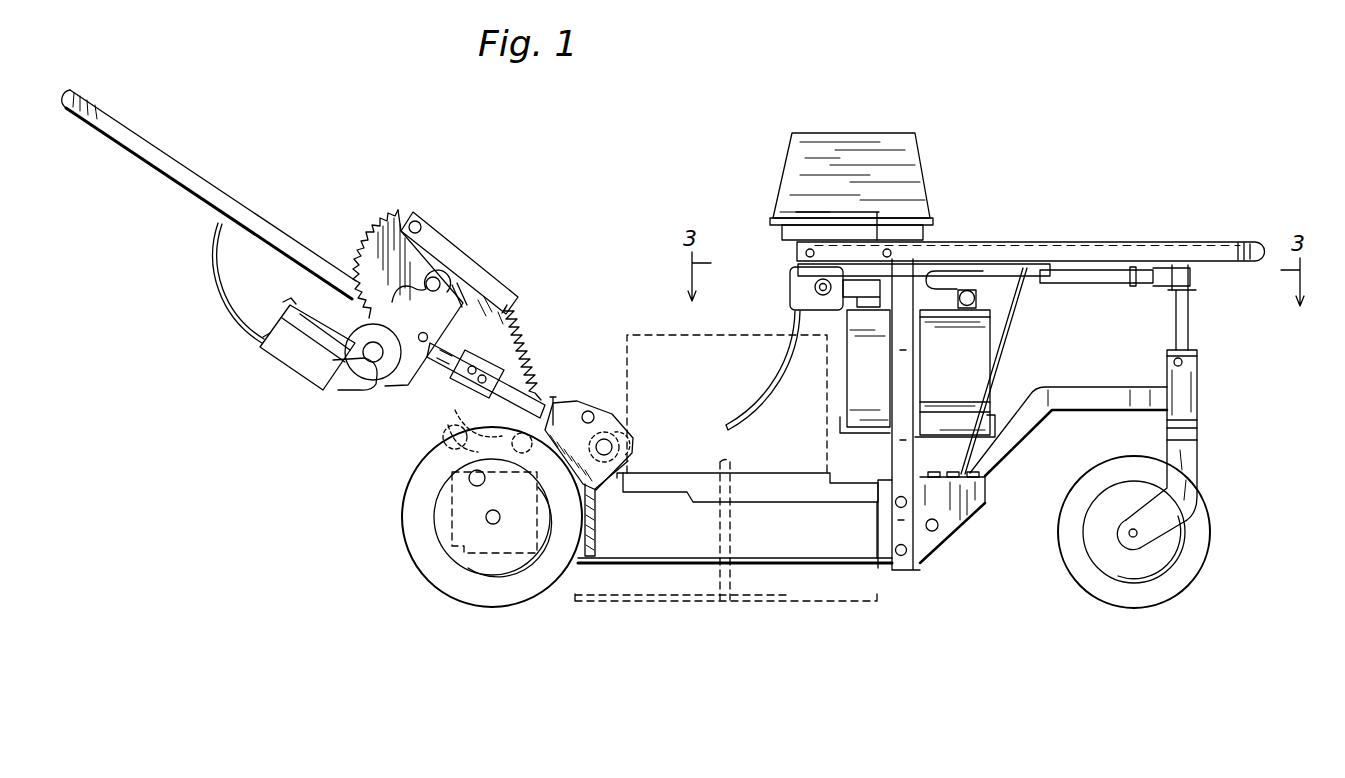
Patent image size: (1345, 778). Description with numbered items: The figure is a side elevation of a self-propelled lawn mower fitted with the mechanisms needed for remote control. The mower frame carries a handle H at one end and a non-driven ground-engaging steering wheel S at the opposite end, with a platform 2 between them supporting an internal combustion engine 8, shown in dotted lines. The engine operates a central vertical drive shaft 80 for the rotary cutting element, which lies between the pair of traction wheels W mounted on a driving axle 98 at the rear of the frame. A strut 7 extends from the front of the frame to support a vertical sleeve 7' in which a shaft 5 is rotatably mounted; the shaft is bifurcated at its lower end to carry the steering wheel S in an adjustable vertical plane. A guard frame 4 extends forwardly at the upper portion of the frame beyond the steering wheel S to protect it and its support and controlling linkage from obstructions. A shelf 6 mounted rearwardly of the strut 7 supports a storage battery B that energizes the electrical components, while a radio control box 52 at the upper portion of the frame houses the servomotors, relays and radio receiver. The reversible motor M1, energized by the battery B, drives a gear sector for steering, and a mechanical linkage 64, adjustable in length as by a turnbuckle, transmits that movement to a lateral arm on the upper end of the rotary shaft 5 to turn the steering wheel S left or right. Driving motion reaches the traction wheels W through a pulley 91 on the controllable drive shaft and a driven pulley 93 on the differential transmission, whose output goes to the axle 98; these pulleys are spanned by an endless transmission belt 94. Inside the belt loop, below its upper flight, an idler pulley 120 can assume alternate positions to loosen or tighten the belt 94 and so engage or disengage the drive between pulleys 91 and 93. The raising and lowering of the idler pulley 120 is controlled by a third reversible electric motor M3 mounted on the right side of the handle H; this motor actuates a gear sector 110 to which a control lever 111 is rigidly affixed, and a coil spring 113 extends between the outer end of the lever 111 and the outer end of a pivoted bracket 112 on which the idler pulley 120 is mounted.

The handle H is at (177, 166).
The gear sector 110 is at (367, 236).
The control lever 111 is at (457, 262).
The coil spring 113 is at (527, 333).
The pivoted bracket 112 is at (571, 407).
The idler pulley 120 is at (457, 427).
The driven pulley 93 is at (580, 478).
The driving axle 98 is at (487, 517).
The endless transmission belt 94 is at (597, 500).
The traction wheels W is at (507, 587).
The pulley 91 is at (640, 443).
The central vertical drive shaft 80 is at (718, 527).
The platform 2 is at (826, 557).
The shelf 6 is at (858, 431).
The internal combustion engine 8 is at (633, 333).
The radio control box 52 is at (846, 140).
The guard frame 4 is at (1117, 250).
The mechanical linkage 64 is at (1078, 283).
The shaft 5 is at (1188, 318).
The strut 7 is at (1068, 406).
The vertical sleeve 7' is at (1183, 450).
The steering wheel S is at (1117, 590).
The third reversible electric motor M3 is at (293, 357).
The motor M1 is at (786, 280).
The storage battery B is at (954, 365).